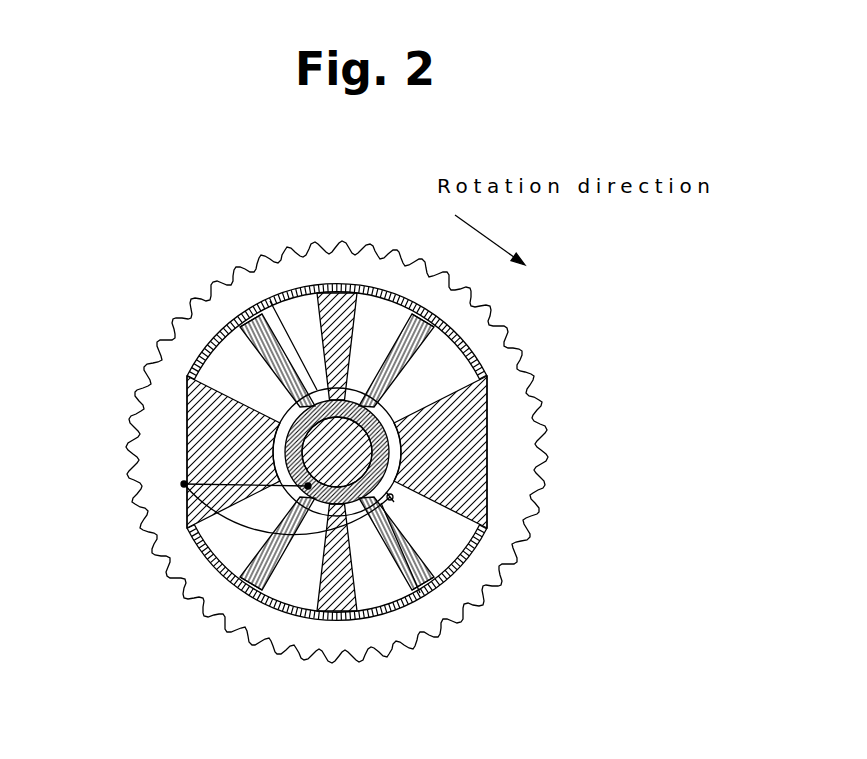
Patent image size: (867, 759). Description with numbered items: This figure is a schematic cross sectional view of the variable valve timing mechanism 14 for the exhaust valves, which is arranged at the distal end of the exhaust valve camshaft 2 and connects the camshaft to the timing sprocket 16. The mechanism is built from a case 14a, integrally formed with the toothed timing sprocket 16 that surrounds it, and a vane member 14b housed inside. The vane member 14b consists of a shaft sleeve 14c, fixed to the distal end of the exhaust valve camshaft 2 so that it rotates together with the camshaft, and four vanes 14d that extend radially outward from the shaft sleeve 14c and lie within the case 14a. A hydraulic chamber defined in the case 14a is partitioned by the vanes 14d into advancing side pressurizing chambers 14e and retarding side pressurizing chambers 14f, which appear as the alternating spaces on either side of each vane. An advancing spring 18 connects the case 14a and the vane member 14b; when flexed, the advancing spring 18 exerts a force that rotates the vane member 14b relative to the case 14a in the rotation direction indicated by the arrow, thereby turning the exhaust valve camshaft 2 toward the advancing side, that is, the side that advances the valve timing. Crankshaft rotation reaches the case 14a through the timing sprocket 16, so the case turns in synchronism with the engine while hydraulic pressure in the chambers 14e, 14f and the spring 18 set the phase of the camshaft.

The exhaust valve camshaft 2 is at (360, 437).
The variable valve timing mechanism 14 is at (573, 278).
The case 14a is at (474, 361).
The vane member 14b is at (247, 340).
The shaft sleeve 14c is at (273, 310).
The vanes 14d is at (248, 320).
The advancing side pressurizing chambers 14e is at (213, 376).
The retarding side pressurizing chambers 14f is at (298, 305).
The timing sprocket 16 is at (523, 428).
The advancing spring 18 is at (245, 522).